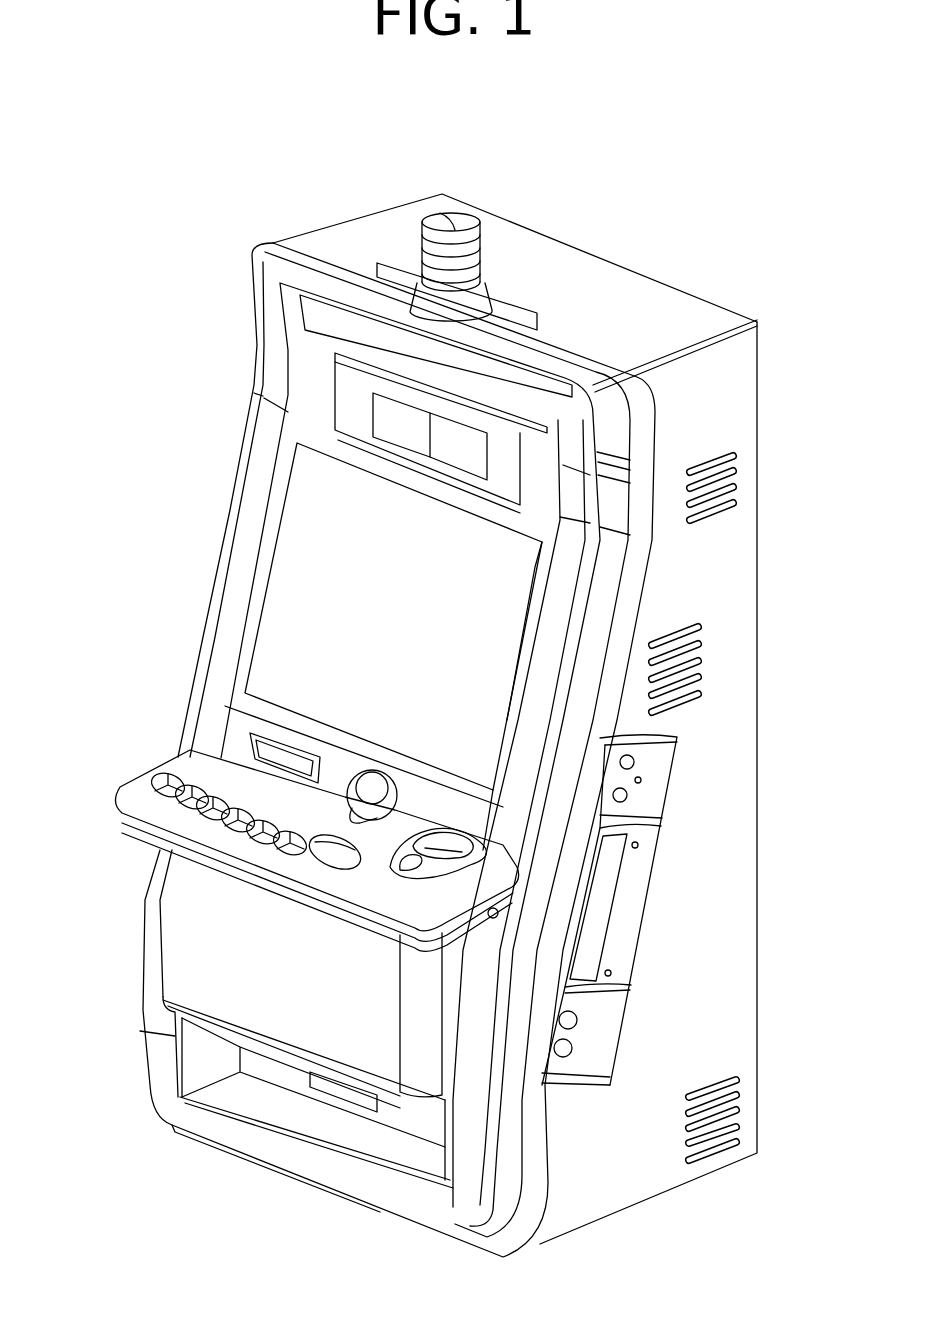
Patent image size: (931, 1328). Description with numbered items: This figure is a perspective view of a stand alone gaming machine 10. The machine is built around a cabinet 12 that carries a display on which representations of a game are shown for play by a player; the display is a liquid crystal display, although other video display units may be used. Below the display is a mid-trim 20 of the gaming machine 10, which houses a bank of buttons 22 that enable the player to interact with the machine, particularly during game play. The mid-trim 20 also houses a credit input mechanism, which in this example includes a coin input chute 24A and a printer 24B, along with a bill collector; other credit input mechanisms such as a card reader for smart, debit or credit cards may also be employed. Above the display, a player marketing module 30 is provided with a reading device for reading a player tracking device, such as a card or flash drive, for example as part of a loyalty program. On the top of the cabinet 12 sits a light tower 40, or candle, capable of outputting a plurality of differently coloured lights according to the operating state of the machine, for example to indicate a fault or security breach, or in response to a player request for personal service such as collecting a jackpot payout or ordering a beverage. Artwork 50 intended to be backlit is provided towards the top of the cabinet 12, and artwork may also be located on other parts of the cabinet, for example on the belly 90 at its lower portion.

The gaming machine 10 is at (640, 250).
The cabinet 12 is at (727, 733).
The mid-trim 20 is at (122, 793).
The push buttons 22 is at (232, 823).
The coin input chute 24A is at (398, 800).
The printer 24B is at (260, 748).
The player marketing module 30 is at (392, 418).
The tower lamp 40 is at (435, 208).
The artwork 50 is at (313, 318).
The belly 90 is at (180, 982).